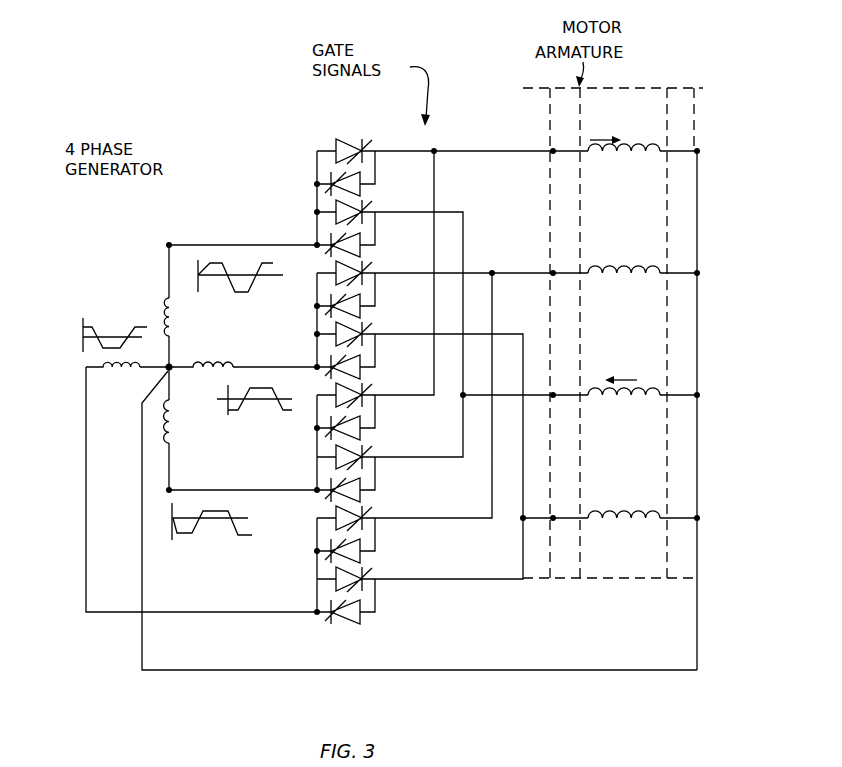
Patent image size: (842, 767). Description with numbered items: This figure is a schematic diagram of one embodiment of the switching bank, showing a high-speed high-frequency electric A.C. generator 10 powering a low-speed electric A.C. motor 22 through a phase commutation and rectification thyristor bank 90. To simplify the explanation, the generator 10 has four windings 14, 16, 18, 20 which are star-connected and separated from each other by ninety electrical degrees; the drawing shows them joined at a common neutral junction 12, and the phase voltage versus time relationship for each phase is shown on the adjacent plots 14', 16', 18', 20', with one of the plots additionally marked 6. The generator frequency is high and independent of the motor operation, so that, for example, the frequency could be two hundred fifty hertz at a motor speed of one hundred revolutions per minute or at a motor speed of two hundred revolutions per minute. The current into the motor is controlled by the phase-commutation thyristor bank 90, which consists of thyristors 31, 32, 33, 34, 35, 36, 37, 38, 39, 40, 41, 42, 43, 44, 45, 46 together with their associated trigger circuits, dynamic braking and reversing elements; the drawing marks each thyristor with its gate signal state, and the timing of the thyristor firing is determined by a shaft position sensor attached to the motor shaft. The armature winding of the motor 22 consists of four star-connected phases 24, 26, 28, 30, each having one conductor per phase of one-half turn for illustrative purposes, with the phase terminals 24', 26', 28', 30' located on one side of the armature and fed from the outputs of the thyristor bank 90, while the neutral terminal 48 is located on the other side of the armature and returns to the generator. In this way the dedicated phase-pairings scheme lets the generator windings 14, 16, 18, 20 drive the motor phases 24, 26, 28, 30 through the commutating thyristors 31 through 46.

The phase voltage waveform 6 is at (199, 521).
The electric A.C. generator 10 is at (223, 331).
The neutral junction of generator windings 12 is at (172, 371).
The generator winding 14 is at (182, 314).
The phase voltage plot 14' is at (228, 272).
The generator winding 16 is at (205, 352).
The phase voltage plot 16' is at (254, 413).
The generator winding 18 is at (127, 383).
The phase voltage plot 18' is at (115, 323).
The generator winding 20 is at (188, 432).
The phase voltage plot 20' is at (209, 545).
The electric A.C. motor 22 is at (637, 333).
The armature phase 24 is at (624, 162).
The phase terminal 24' is at (528, 164).
The armature phase 26 is at (624, 256).
The phase terminal 26' is at (530, 285).
The armature phase 28 is at (624, 408).
The phase terminal 28' is at (543, 410).
The armature phase 30 is at (624, 502).
The phase terminal 30' is at (543, 532).
The thyristor 31 is at (336, 141).
The thyristor 32 is at (331, 174).
The thyristor 33 is at (336, 202).
The thyristor 34 is at (331, 235).
The thyristor 35 is at (336, 263).
The thyristor 36 is at (331, 296).
The thyristor 37 is at (336, 324).
The thyristor 38 is at (331, 357).
The thyristor 39 is at (336, 385).
The thyristor 40 is at (331, 418).
The thyristor 41 is at (336, 447).
The thyristor 42 is at (331, 480).
The thyristor 43 is at (336, 508).
The thyristor 44 is at (331, 541).
The thyristor 45 is at (336, 569).
The thyristor 46 is at (331, 602).
The neutral terminal 48 is at (215, 670).
The phase-commutation thyristor bank 90 is at (405, 118).